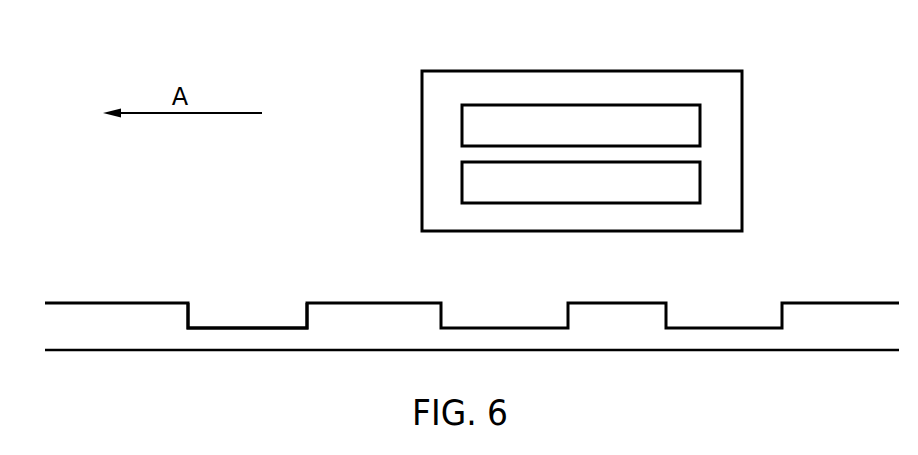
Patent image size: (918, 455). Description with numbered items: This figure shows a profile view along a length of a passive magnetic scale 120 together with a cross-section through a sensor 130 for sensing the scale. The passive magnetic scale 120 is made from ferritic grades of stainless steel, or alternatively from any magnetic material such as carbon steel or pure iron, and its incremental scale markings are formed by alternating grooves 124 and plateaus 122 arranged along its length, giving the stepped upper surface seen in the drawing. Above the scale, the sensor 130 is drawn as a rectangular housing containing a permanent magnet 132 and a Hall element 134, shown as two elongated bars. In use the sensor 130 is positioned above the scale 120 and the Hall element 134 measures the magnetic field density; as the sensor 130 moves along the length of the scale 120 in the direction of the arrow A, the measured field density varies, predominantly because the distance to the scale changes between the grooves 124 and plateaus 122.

The passive magnetic scale 120 is at (125, 337).
The plateaus 122 is at (131, 308).
The grooves 124 is at (245, 325).
The sensor 130 is at (700, 82).
The permanent magnet 132 is at (688, 126).
The Hall element 134 is at (688, 175).